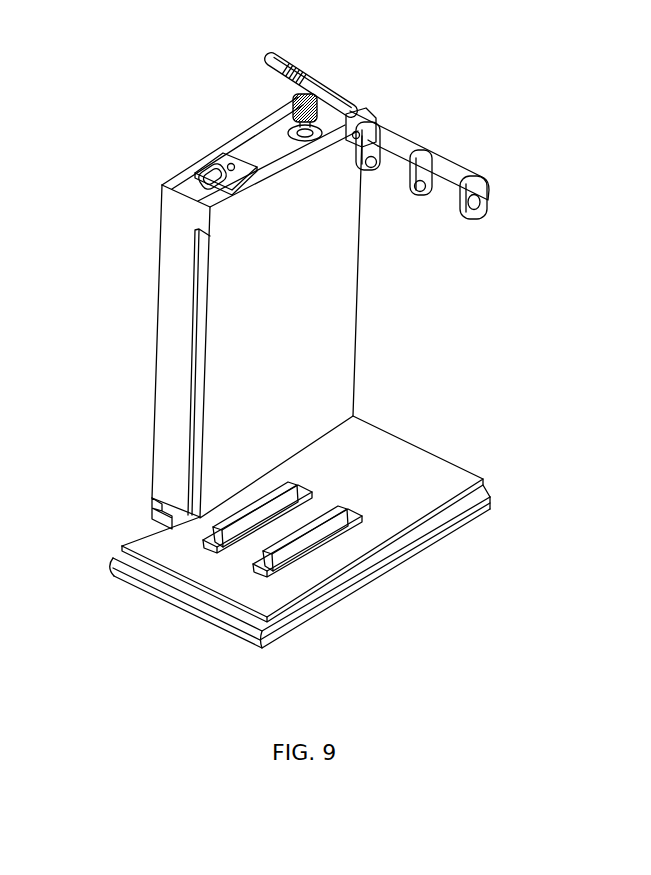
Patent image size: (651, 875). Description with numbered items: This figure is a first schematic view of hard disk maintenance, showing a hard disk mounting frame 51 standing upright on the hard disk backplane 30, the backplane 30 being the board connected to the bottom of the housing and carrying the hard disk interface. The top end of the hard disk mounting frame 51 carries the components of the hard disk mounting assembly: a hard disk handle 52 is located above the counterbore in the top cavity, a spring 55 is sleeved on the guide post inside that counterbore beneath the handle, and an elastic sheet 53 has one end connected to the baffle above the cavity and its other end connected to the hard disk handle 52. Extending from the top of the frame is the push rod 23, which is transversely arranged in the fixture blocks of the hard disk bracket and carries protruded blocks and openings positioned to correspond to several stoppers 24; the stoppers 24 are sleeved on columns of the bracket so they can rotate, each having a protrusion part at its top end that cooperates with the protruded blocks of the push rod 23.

The push rod 23 is at (455, 166).
The stoppers 24 is at (428, 158).
The hard disk backplane 30 is at (393, 503).
The hard disk mounting frame 51 is at (175, 248).
The hard disk handle 52 is at (325, 90).
The elastic sheet 53 is at (220, 162).
The spring 55 is at (294, 102).